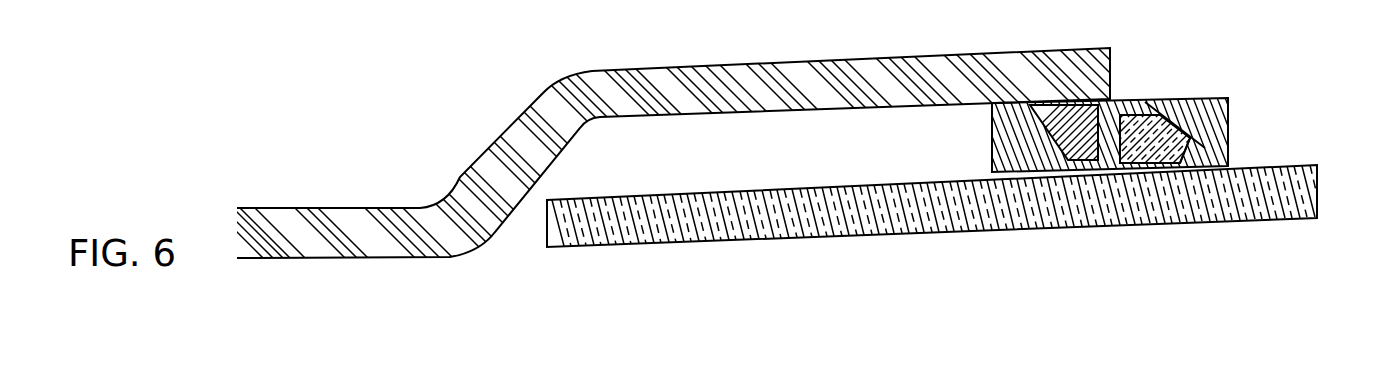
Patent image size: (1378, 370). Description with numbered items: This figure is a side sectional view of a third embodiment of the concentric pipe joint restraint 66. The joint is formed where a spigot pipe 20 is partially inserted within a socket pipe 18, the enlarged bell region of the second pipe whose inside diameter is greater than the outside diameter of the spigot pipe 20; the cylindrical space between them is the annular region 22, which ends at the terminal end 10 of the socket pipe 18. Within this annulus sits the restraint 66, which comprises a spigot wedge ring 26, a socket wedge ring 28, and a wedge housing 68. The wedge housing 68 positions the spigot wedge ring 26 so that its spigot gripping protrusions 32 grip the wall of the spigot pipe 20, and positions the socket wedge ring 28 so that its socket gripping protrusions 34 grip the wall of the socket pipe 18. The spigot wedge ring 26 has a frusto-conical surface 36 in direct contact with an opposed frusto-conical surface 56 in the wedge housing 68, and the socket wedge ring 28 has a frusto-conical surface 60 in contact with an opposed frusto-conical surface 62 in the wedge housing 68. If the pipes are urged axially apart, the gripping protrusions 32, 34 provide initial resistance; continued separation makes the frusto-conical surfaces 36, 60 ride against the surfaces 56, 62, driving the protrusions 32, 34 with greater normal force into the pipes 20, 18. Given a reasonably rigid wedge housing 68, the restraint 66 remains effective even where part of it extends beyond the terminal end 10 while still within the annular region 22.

The terminal end 10 is at (1148, 139).
The socket pipe 18 is at (677, 150).
The spigot pipe 20 is at (713, 270).
The annular region 22 is at (625, 152).
The spigot wedge ring 26 is at (1175, 167).
The socket wedge ring 28 is at (1108, 72).
The spigot gripping protrusions 32 is at (1165, 157).
The socket gripping protrusions 34 is at (1068, 104).
The frusto-conical surface 36 is at (1167, 150).
The frusto-conical surface 56 is at (1198, 145).
The frusto-conical surface 60 is at (1097, 138).
The frusto-conical surface 62 is at (1028, 103).
The joint restraint 66 is at (1148, 139).
The wedge housing 68 is at (1127, 99).